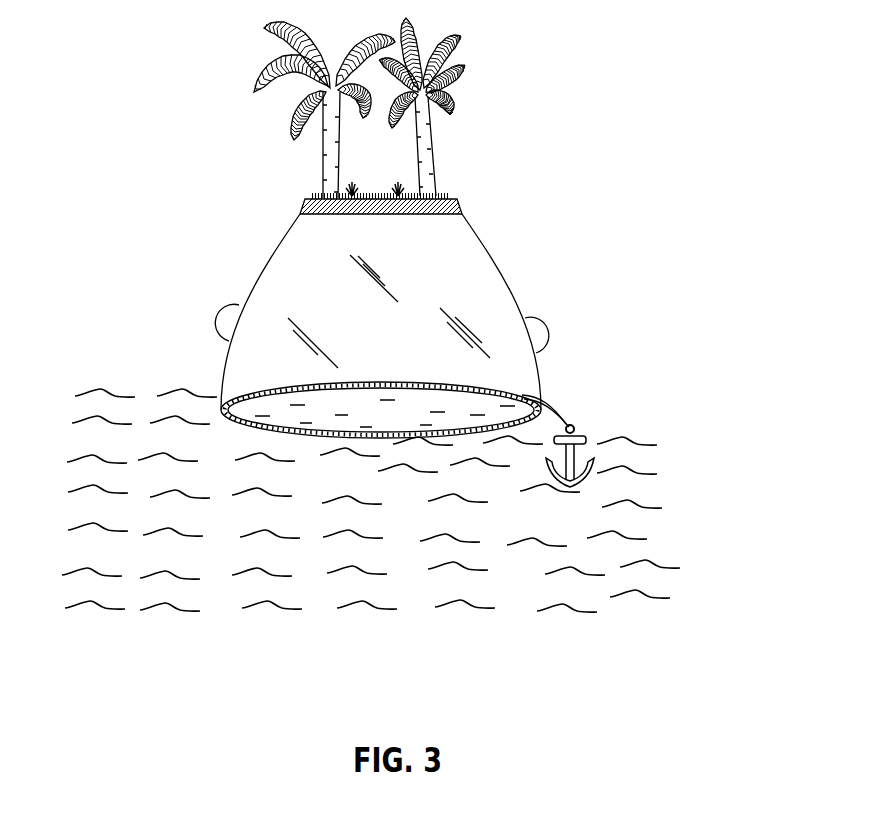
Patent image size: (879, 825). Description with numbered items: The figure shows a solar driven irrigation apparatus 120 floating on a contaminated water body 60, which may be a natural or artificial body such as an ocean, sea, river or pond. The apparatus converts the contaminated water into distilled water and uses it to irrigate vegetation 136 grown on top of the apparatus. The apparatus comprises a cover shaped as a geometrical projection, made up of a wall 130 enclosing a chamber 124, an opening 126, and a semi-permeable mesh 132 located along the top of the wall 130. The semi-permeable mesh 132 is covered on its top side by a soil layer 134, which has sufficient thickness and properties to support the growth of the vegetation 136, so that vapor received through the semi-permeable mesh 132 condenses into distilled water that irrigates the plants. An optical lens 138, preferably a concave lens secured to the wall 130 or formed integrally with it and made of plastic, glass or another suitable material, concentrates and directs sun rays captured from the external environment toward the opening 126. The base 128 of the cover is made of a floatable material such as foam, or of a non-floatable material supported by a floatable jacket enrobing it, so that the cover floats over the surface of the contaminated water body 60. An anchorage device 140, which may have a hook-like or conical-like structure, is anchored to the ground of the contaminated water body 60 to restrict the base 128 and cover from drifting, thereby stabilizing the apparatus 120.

The contaminated water body 60 is at (605, 505).
The solar driven irrigation apparatus 120 is at (166, 160).
The chamber 124 is at (443, 270).
The opening 126 is at (542, 393).
The base 128 is at (519, 393).
The wall 130 is at (516, 298).
The semi-permeable mesh 132 is at (308, 214).
The soil layer 134 is at (443, 196).
The vegetation 136 is at (436, 142).
The optical lens 138 is at (540, 338).
The anchorage device 140 is at (592, 462).